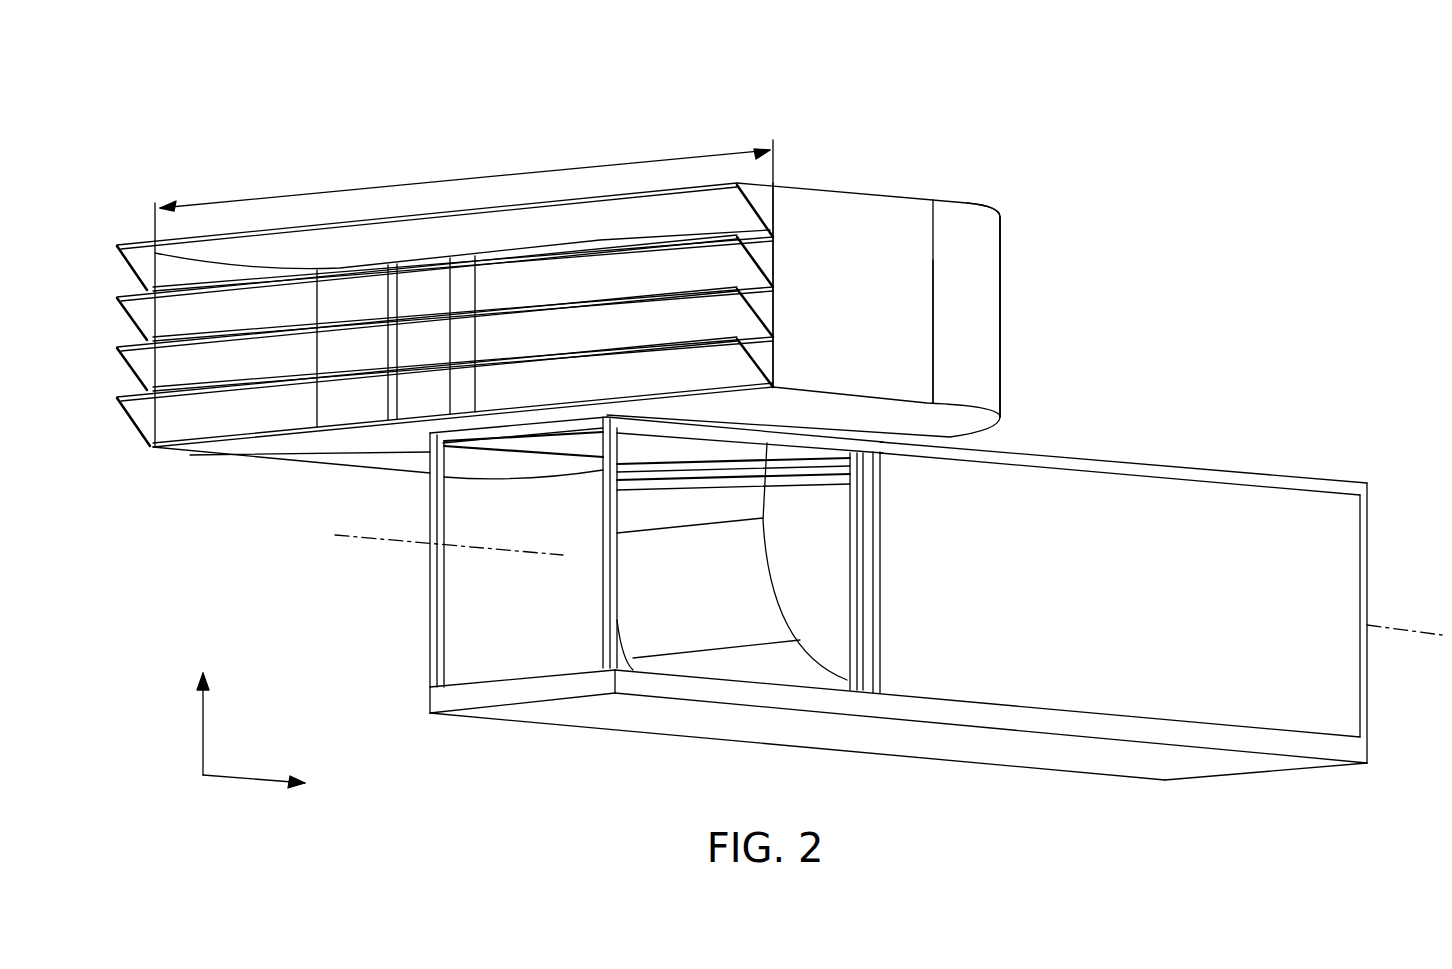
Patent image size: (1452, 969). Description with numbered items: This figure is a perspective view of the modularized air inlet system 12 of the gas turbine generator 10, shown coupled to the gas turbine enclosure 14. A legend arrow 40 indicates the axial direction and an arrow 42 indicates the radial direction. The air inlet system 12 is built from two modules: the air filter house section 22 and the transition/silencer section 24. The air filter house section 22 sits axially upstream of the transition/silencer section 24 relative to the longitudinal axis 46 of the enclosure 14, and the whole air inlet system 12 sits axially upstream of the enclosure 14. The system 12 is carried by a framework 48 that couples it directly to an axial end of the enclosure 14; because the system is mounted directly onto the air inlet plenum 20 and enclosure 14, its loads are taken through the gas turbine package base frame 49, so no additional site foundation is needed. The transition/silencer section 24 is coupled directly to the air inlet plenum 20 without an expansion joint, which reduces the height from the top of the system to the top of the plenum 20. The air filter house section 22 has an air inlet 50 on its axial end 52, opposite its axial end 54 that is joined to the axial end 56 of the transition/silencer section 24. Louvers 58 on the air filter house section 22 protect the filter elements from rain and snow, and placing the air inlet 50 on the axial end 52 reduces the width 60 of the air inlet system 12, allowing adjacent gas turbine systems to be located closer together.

The gas turbine generator 10 is at (1000, 130).
The modularized air inlet system 12 is at (671, 120).
The gas turbine enclosure 14 is at (1310, 527).
The air inlet plenum 20 is at (823, 560).
The air filter house section 22 is at (853, 193).
The transition/silencer section 24 is at (972, 203).
The axial axis 40 is at (247, 777).
The radial axis 42 is at (202, 730).
The longitudinal axis 46 is at (393, 542).
The framework 48 is at (433, 492).
The gas turbine package base frame 49 is at (1045, 718).
The air inlet 50 is at (248, 413).
The axial end 52 is at (773, 213).
The axial end 54 is at (933, 238).
The axial end 56 is at (933, 273).
The louvers 58 is at (133, 277).
The width 60 is at (448, 163).